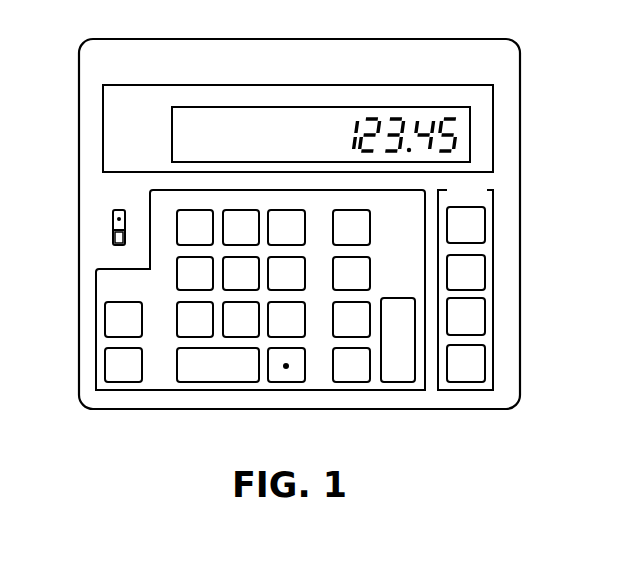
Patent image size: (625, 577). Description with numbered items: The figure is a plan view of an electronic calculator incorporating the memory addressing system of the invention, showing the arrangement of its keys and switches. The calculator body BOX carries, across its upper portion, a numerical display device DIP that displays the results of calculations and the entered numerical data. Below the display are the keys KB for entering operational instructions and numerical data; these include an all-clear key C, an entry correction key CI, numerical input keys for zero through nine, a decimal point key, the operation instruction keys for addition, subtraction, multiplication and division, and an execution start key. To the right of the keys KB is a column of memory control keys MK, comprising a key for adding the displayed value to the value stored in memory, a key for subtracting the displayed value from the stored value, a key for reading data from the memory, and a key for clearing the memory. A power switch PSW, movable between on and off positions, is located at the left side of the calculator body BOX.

The calculator body BOX is at (350, 50).
The numerical display device DIP is at (455, 110).
The power switch PSW is at (112, 237).
The keys KB is at (320, 382).
The memory control keys MK is at (485, 247).